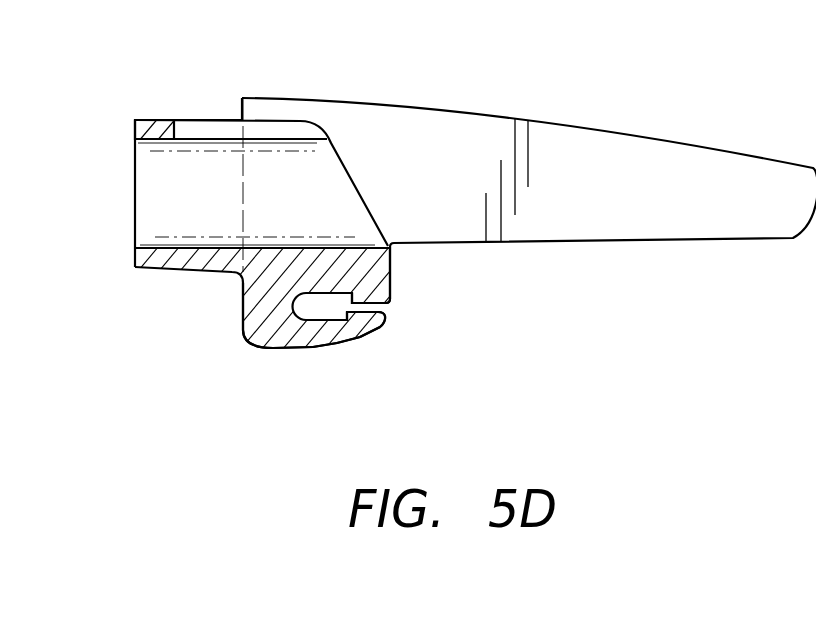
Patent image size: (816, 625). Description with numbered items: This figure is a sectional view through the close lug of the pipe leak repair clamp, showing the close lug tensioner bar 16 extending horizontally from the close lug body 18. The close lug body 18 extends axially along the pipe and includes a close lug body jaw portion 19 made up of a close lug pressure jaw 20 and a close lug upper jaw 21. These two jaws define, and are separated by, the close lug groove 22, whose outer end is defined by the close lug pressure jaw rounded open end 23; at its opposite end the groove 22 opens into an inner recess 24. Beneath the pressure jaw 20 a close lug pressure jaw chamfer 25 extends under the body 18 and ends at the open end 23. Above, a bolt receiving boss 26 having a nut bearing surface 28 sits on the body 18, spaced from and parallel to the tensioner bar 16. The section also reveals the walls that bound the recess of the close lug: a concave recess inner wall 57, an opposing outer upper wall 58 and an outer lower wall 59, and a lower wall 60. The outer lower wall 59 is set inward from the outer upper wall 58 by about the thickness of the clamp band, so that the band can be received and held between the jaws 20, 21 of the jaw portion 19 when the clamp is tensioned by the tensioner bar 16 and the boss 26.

The close lug tensioner bar 16 is at (735, 213).
The close lug body 18 is at (243, 302).
The close lug body jaw portion 19 is at (393, 294).
The close lug pressure jaw 20 is at (363, 338).
The close lug upper jaw 21 is at (358, 272).
The close lug groove 22 is at (380, 327).
The close lug pressure jaw rounded open end 23 is at (390, 320).
The inner recess 24 is at (280, 350).
The close lug pressure jaw chamfer 25 is at (335, 348).
The bolt receiving boss 26 is at (197, 119).
The nut bearing surface 28 is at (133, 170).
The concave recess inner wall 57 is at (293, 306).
The outer upper wall 58 is at (390, 281).
The outer lower wall 59 is at (377, 330).
The lower wall 60 is at (347, 315).